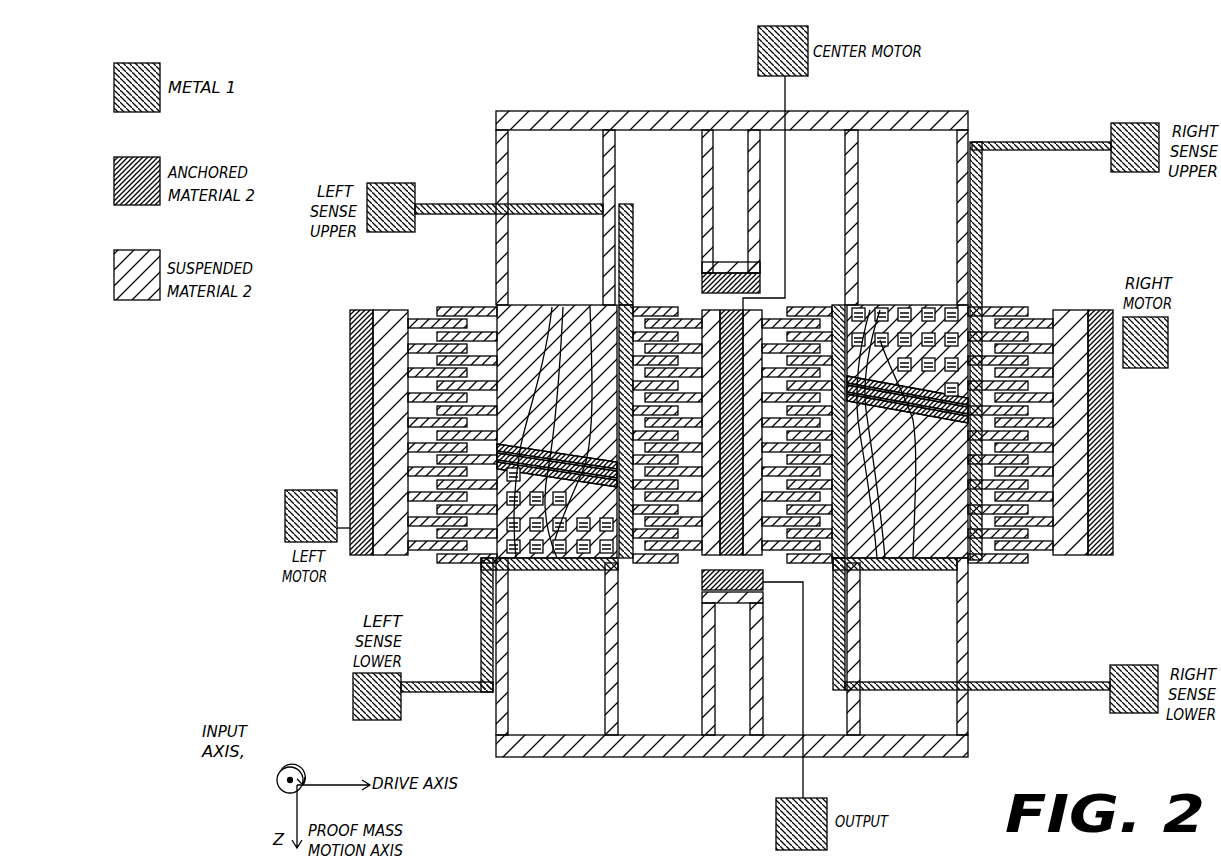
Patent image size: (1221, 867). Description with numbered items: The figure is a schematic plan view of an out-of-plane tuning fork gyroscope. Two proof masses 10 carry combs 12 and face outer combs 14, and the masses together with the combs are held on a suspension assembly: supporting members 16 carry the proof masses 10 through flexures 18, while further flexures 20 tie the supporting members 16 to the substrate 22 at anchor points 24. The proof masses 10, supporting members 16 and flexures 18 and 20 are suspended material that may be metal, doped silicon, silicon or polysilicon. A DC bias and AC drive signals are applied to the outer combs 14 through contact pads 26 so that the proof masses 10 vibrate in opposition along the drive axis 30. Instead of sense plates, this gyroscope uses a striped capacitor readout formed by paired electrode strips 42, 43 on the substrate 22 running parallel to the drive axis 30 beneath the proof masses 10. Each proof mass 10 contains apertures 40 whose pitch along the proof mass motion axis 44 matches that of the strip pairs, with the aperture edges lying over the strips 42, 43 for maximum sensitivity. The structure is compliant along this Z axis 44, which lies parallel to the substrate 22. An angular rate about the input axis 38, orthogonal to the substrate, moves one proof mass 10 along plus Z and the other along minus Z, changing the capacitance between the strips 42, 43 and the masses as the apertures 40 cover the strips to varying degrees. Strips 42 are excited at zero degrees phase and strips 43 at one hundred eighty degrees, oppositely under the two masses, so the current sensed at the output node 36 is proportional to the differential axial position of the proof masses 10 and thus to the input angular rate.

The proof mass 10 is at (533, 307).
The comb 12 is at (653, 307).
The outer comb 14 is at (457, 307).
The supporting member 16 is at (565, 111).
The flexure 18 is at (508, 183).
The flexure 20 is at (748, 160).
The substrate 22 is at (666, 697).
The anchor point 24 is at (702, 282).
The contact pad 26 is at (1153, 368).
The drive axis 30 is at (334, 785).
The output node 36 is at (776, 826).
The input axis 38 is at (276, 780).
The aperture 40 is at (895, 310).
The capacitor strip 42 is at (556, 307).
The capacitor strip 43 is at (588, 307).
The proof mass motion axis 44 is at (297, 812).